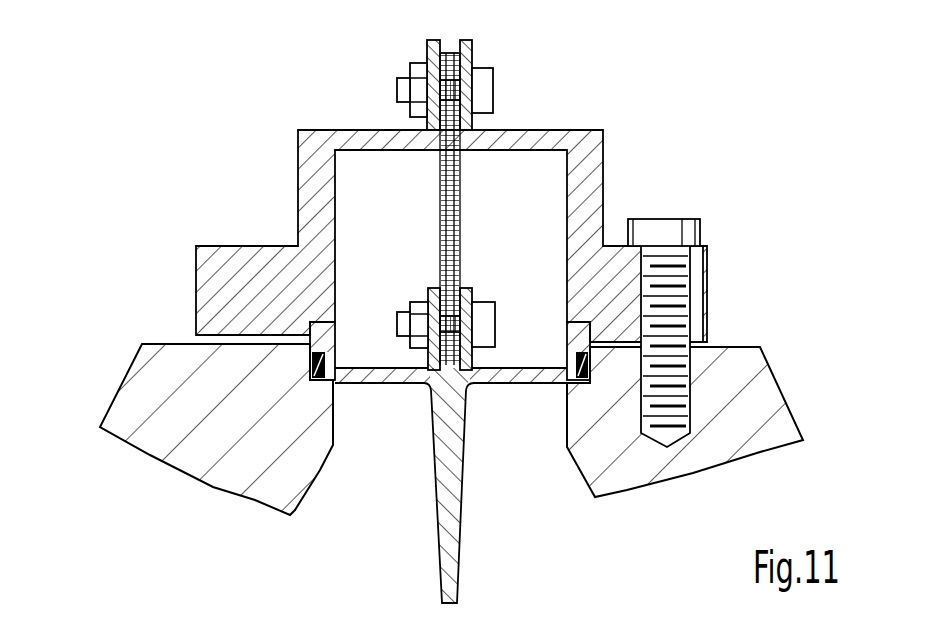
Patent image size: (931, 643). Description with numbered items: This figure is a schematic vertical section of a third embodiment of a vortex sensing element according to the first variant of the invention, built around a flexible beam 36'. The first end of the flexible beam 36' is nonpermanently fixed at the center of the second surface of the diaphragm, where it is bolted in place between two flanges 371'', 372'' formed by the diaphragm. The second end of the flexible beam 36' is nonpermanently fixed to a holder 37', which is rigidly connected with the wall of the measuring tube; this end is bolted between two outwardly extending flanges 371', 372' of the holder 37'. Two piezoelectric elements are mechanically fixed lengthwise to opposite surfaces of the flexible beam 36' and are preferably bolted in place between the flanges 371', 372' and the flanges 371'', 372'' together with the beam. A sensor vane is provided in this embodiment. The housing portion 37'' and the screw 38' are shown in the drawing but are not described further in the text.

The flexible beam 36' is at (482, 209).
The holder 37' is at (578, 227).
The housing left part 37'' is at (318, 232).
The outwardly extending flange of the holder 371' is at (387, 71).
The outwardly extending flange of the holder 372' is at (510, 71).
The flange formed by the diaphragm 371'' is at (402, 298).
The flange formed by the diaphragm 372'' is at (505, 298).
The fastening screw 38' is at (704, 317).